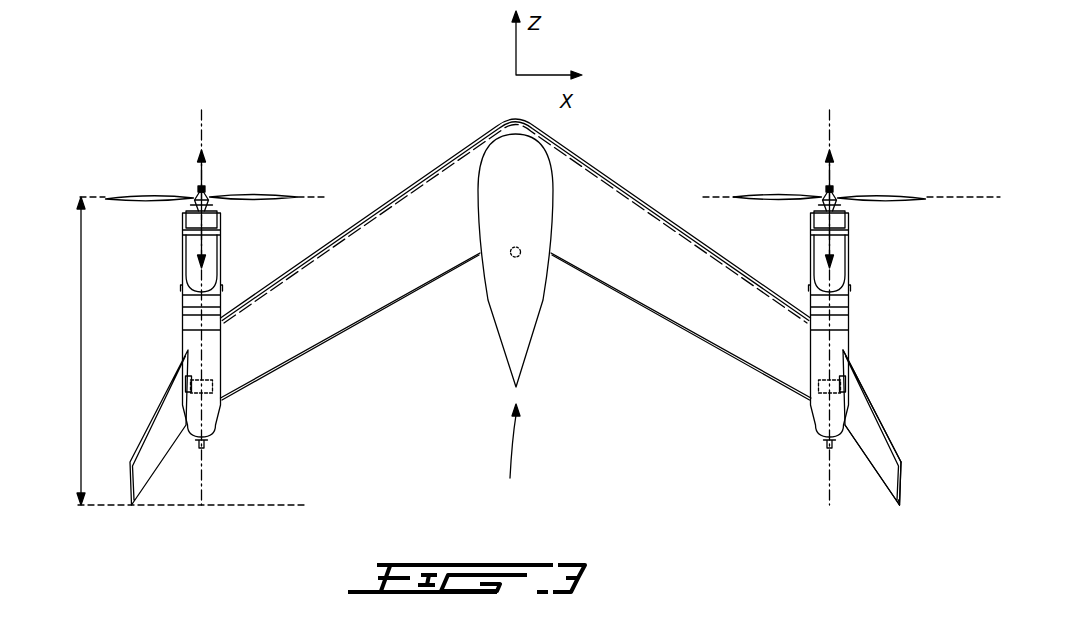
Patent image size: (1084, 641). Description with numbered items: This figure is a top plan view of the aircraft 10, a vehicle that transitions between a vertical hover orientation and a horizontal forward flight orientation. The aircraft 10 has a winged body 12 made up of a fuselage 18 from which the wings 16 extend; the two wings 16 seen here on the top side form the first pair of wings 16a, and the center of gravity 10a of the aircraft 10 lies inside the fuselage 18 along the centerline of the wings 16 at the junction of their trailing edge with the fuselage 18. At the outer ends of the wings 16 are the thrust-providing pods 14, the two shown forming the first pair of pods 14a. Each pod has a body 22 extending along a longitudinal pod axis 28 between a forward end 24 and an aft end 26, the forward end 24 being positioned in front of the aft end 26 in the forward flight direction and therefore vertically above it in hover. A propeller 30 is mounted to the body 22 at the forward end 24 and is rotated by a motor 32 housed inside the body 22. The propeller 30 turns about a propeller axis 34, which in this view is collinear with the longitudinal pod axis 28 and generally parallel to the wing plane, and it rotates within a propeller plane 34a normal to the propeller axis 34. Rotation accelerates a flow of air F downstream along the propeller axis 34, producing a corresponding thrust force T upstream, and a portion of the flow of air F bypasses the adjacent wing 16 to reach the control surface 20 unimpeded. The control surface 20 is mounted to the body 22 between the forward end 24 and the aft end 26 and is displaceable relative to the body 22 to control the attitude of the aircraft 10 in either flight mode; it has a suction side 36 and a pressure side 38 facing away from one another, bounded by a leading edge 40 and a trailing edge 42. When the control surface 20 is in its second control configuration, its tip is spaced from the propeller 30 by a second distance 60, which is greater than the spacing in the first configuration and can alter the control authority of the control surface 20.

The aircraft 10 is at (787, 77).
The center of gravity 10a is at (520, 256).
The winged body 12 is at (511, 454).
The thrust-providing pod assembly 14 is at (516, 394).
The first pair of pods 14a is at (285, 465).
The wing 16 is at (516, 327).
The first pair of wings 16a is at (338, 312).
The fuselage 18 is at (518, 345).
The control surface 20 is at (137, 412).
The body 22 is at (188, 337).
The forward end 24 is at (190, 204).
The aft end 26 is at (207, 446).
The longitudinal pod axis 28 is at (203, 495).
The propeller 30 is at (150, 197).
The motor 32 is at (213, 250).
The propeller axis 34 is at (201, 120).
The propeller plane 34a is at (90, 197).
The suction side 36 is at (886, 478).
The pressure side 38 is at (905, 475).
The leading edge 40 is at (876, 412).
The trailing edge 42 is at (900, 495).
The second distance 60 is at (80, 355).
The thrust force T is at (205, 178).
The flow of air F is at (186, 238).